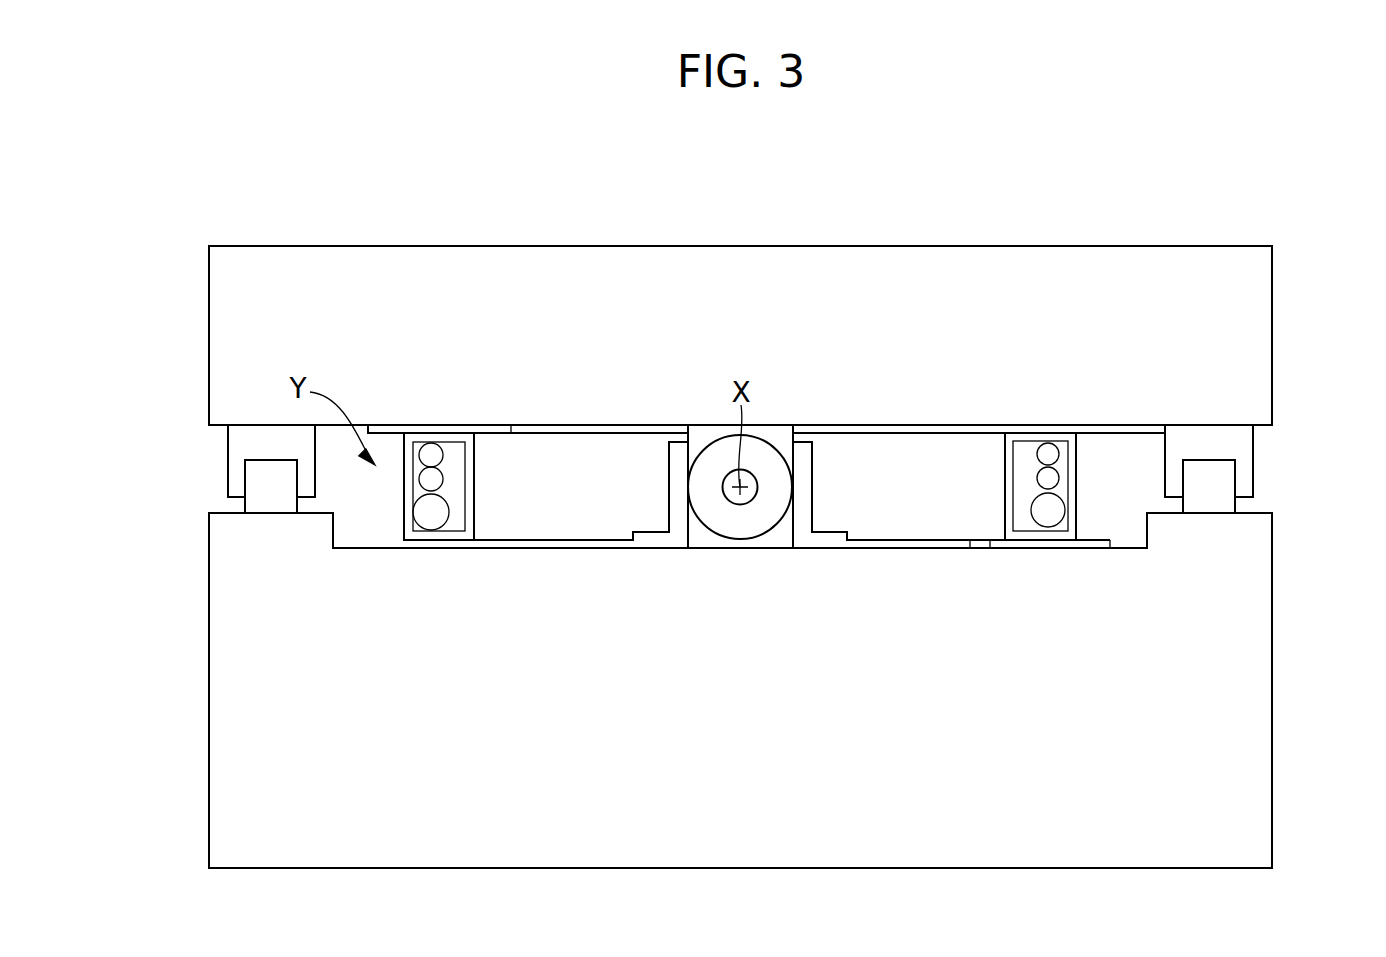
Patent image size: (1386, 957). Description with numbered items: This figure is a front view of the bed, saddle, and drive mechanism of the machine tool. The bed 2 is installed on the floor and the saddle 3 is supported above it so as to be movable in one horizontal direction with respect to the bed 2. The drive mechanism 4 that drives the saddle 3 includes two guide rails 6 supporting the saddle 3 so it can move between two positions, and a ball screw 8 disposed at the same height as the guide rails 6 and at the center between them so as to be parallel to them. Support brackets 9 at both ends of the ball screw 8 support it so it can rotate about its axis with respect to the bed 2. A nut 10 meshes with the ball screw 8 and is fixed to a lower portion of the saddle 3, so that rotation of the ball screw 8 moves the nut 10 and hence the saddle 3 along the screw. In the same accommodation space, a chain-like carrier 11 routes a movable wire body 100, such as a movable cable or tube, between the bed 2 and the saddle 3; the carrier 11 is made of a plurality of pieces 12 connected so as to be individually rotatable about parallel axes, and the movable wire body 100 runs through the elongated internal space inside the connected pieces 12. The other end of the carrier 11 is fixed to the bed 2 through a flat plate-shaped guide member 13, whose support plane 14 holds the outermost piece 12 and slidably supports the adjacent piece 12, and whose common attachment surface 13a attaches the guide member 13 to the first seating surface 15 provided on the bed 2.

The bed 2 is at (1288, 708).
The saddle 3 is at (1288, 350).
The drive mechanism 4 is at (190, 428).
The guide rail 6 is at (245, 477).
The ball screw 8 is at (747, 505).
The support bracket 9 is at (670, 478).
The nut 10 is at (703, 528).
The carrier 11 is at (1065, 415).
The piece 12 is at (1077, 458).
The guide member 13 is at (1130, 543).
The common attachment surface 13a is at (1053, 548).
The support plane 14 is at (1097, 538).
The first seating surface 15 is at (988, 548).
The movable wire body 100 is at (1043, 448).